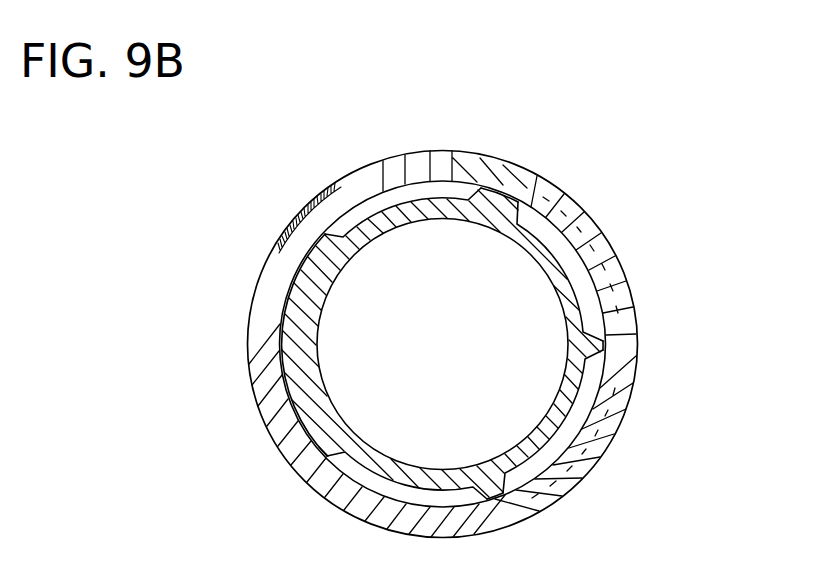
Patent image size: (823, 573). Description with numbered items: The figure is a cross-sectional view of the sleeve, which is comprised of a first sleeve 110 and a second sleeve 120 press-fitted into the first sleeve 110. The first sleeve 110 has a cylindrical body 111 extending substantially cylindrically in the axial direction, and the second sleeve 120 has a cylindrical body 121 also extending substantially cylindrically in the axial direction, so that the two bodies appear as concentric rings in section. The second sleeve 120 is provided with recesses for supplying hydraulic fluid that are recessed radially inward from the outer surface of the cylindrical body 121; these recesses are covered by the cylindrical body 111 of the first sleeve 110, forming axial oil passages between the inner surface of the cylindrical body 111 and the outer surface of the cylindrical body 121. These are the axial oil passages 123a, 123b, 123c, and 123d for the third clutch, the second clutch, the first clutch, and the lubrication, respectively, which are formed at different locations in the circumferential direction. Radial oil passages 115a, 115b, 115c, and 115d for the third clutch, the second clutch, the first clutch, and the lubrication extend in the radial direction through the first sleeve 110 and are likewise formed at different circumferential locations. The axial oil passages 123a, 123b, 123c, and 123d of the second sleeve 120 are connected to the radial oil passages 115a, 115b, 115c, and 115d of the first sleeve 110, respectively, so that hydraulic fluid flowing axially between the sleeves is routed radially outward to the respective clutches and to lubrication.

The first sleeve 110 is at (298, 216).
The cylindrical body 111 is at (250, 320).
The radial oil passage for the third clutch 115a is at (389, 157).
The radial oil passage for the second clutch 115b is at (557, 210).
The radial oil passage for the first clutch 115c is at (627, 397).
The radial oil passage for the lubrication 115d is at (373, 510).
The second sleeve 120 is at (323, 368).
The cylindrical body 121 is at (333, 420).
The axial oil passage for the third clutch 123a is at (396, 200).
The axial oil passage for the second clutch 123b is at (577, 265).
The axial oil passage for the first clutch 123c is at (550, 447).
The axial oil passage for the lubrication 123d is at (397, 490).